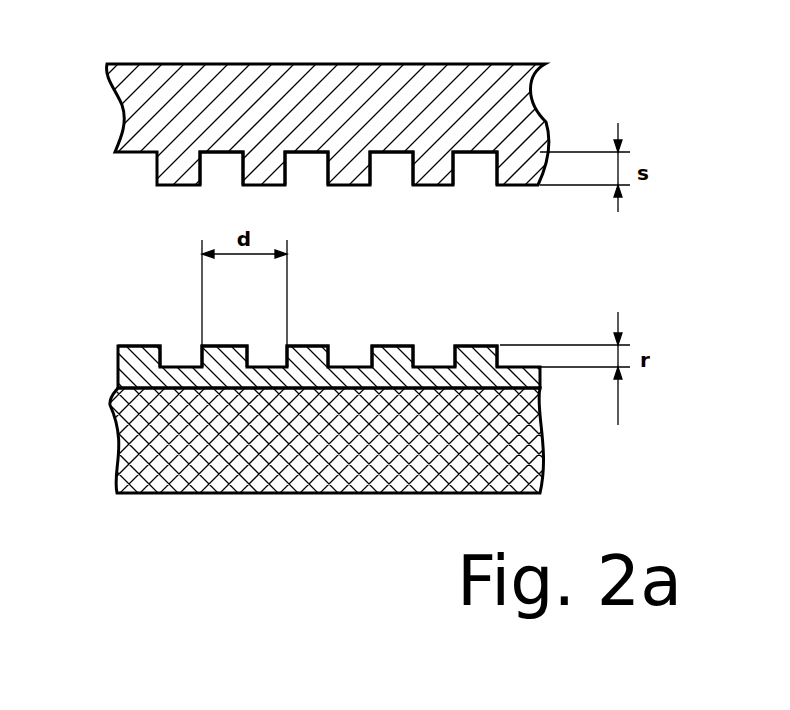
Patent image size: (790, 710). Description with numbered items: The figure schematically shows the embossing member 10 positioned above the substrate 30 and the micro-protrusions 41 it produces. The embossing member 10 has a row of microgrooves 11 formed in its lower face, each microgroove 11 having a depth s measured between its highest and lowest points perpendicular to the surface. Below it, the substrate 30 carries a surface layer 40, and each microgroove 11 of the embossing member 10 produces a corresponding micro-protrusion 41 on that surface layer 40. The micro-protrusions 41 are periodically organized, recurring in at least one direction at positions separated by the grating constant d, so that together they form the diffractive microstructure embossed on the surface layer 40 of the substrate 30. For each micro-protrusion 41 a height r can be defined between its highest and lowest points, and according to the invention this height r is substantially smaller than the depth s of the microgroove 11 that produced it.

The embossing member 10 is at (122, 140).
The microgroove 11 is at (230, 184).
The substrate 30 is at (122, 481).
The surface layer 40 is at (118, 377).
The micro-protrusion 41 is at (138, 346).